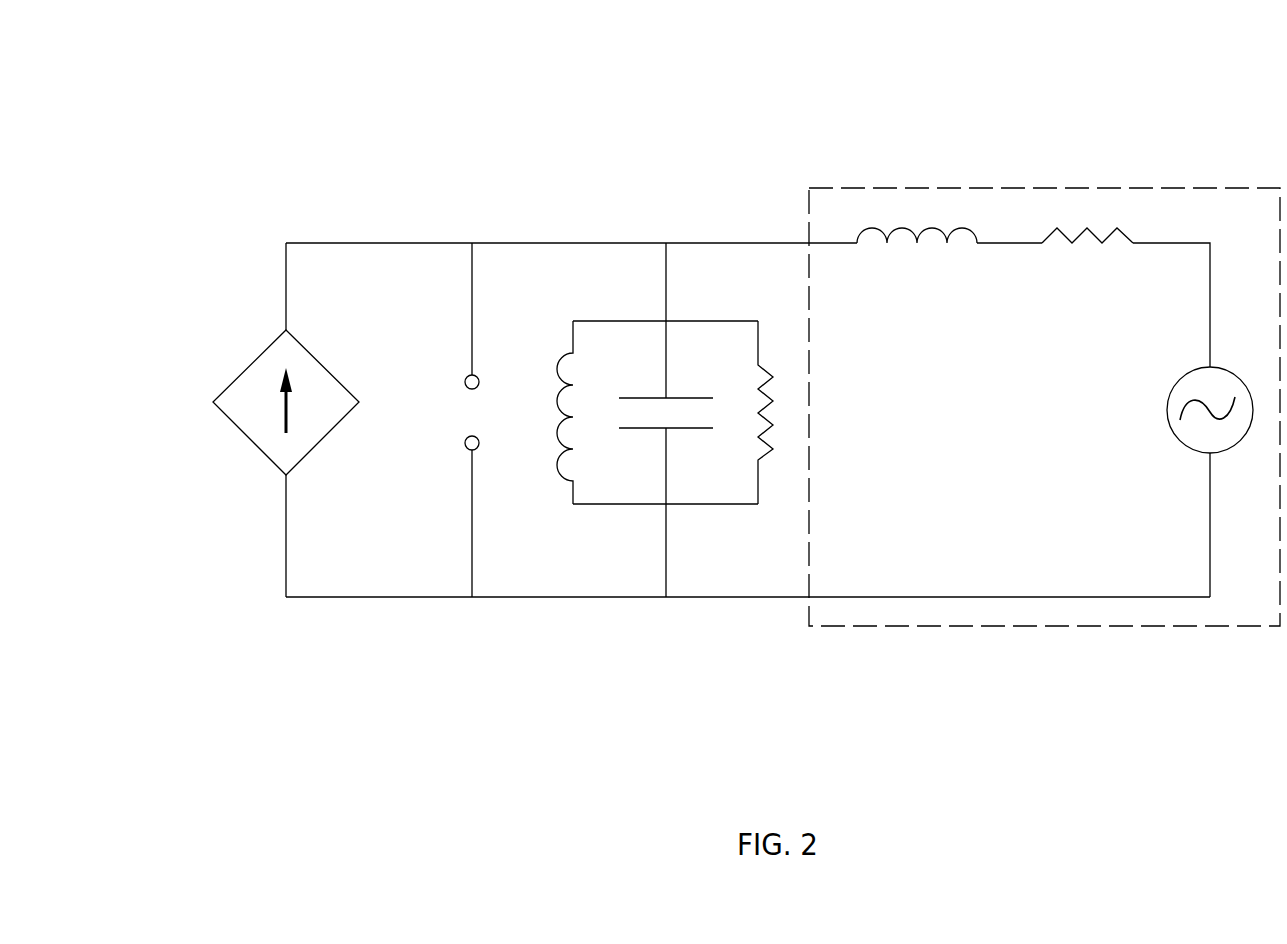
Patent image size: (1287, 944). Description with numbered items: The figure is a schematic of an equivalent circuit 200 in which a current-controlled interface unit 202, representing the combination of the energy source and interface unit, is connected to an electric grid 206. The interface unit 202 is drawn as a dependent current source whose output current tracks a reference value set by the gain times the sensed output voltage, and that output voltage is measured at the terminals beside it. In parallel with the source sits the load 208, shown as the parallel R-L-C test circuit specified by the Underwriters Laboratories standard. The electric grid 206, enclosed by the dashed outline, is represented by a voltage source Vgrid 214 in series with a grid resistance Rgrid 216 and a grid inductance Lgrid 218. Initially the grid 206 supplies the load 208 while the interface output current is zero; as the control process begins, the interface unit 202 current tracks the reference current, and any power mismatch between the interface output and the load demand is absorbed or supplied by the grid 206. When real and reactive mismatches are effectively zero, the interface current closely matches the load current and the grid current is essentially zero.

The equivalent circuit 200 is at (423, 152).
The current-controlled interface unit 202 is at (310, 450).
The electric grid 206 is at (1025, 627).
The load 208 is at (687, 505).
The voltage source Vgrid 214 is at (1166, 410).
The grid resistance Rgrid 216 is at (1072, 243).
The grid inductance Lgrid 218 is at (886, 243).